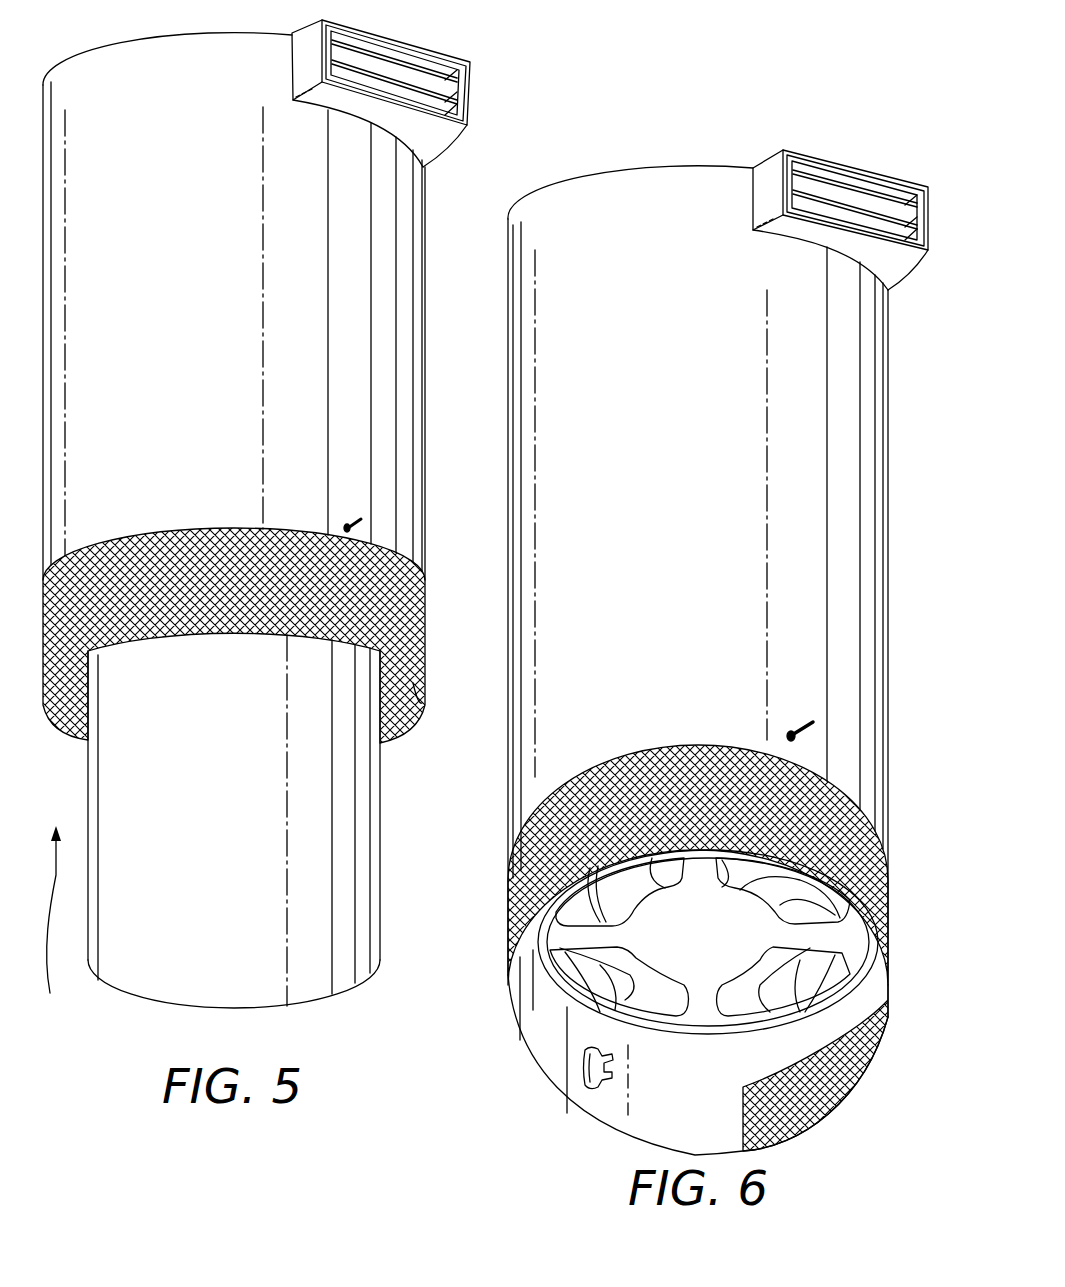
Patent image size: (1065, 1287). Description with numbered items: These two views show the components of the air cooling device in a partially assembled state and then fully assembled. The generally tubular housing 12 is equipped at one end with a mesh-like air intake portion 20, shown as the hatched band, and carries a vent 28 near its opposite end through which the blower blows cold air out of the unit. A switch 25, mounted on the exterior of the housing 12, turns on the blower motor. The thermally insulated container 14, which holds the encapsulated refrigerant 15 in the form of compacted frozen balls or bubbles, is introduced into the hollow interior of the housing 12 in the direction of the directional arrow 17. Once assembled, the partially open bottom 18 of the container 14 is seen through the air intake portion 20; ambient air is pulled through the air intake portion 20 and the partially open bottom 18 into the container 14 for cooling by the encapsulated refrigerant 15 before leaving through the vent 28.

In FIG. 5, the housing 12 is at (73, 88).
In FIG. 6, the housing 12 is at (847, 535).
In FIG. 5, the container 14 is at (345, 845).
In FIG. 6, the container 14 is at (550, 937).
In FIG. 6, the encapsulated refrigerant 15 is at (818, 967).
In FIG. 5, the directional arrow 17 is at (57, 922).
In FIG. 6, the partially open bottom 18 is at (675, 950).
In FIG. 5, the air intake portion 20 is at (400, 628).
In FIG. 6, the air intake portion 20 is at (863, 1055).
In FIG. 5, the switch 25 is at (363, 518).
In FIG. 6, the switch 25 is at (813, 723).
In FIG. 5, the vent 28 is at (443, 87).
In FIG. 6, the vent 28 is at (873, 205).